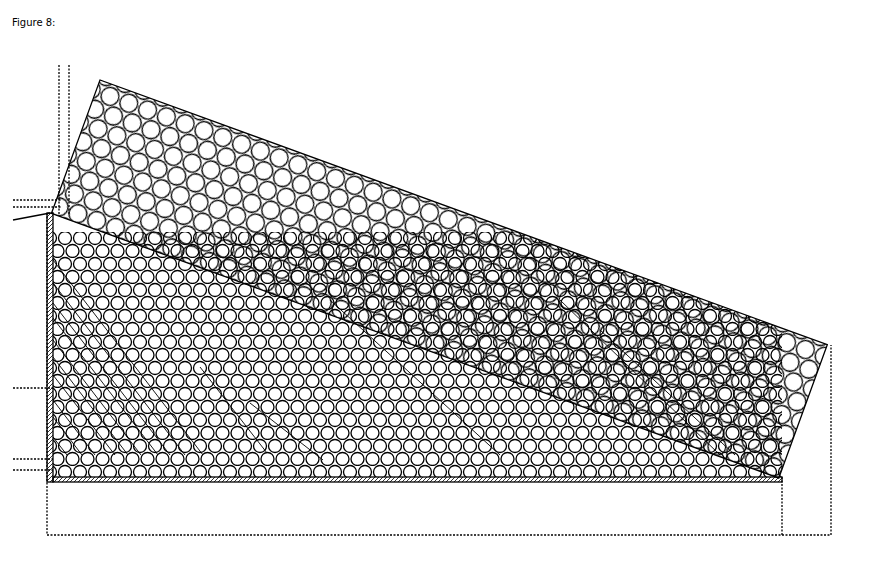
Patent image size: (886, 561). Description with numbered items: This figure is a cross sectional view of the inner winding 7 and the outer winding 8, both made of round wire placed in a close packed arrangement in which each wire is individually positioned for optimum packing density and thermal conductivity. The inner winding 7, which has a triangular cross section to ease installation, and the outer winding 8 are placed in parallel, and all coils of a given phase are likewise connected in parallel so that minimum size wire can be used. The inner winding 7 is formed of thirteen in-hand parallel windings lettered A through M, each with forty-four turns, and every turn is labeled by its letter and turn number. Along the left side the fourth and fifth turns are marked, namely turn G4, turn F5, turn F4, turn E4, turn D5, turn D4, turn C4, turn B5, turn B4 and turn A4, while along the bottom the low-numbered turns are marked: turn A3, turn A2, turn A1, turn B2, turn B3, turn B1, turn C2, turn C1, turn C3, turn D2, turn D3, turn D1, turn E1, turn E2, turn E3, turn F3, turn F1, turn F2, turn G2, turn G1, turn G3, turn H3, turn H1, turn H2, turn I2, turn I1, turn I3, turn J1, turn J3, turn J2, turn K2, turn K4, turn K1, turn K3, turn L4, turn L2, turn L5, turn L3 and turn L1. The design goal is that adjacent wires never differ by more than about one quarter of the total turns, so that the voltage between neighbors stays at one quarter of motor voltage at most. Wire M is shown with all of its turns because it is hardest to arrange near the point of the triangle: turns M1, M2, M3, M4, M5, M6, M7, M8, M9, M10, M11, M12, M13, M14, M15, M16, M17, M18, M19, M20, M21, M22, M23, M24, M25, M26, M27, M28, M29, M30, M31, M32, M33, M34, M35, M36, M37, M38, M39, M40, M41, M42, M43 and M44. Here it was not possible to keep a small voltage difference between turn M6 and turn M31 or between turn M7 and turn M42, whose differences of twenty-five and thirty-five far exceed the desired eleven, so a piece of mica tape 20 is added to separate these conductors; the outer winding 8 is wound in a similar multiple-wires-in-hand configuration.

The inner winding 7 is at (208, 232).
The outer winding 8 is at (327, 232).
The mica tape 20 is at (783, 470).
The turn 4 of winding G G4 is at (53, 260).
The turn 5 of winding F F5 is at (53, 283).
The turn 4 of winding F F4 is at (53, 303).
The turn 4 of winding E E4 is at (53, 318).
The turn 5 of winding D D5 is at (53, 340).
The turn 4 of winding D D4 is at (53, 357).
The turn 4 of winding C C4 is at (53, 375).
The turn 5 of winding B B5 is at (53, 400).
The turn 4 of winding B B4 is at (53, 417).
The turn 4 of winding A A4 is at (53, 437).
The turn 12 of winding M M12 is at (552, 470).
The turn 23 of winding M M23 is at (572, 470).
The turn 26 of winding M M26 is at (549, 470).
The turn 13 of winding M M13 is at (546, 470).
The turn 27 of winding M M27 is at (543, 470).
The turn 24 of winding M M24 is at (540, 470).
The turn 25 of winding M M25 is at (537, 470).
The turn 28 of winding M M28 is at (578, 470).
The turn 14 of winding M M14 is at (581, 470).
The turn 22 of winding M M22 is at (584, 470).
The turn 11 of winding M M11 is at (587, 470).
The turn 29 of winding M M29 is at (590, 470).
The turn 15 of winding M M15 is at (593, 470).
The turn 21 of winding M M21 is at (600, 470).
The turn 30 of winding M M30 is at (604, 470).
The turn 10 of winding M M10 is at (608, 470).
The turn 16 of winding M M16 is at (612, 470).
The turn 20 of winding M M20 is at (616, 470).
The turn 9 of winding M M9 is at (620, 470).
The turn 17 of winding M M17 is at (624, 470).
The turn 19 of winding M M19 is at (628, 470).
The turn 8 of winding M M8 is at (632, 470).
The turn 18 of winding M M18 is at (636, 470).
The turn 7 of winding M M7 is at (640, 470).
The turn 42 of winding M M42 is at (650, 470).
The turn 41 of winding M M41 is at (655, 470).
The turn 43 of winding M M43 is at (660, 470).
The turn 44 of winding M M44 is at (665, 470).
The turn 40 of winding M M40 is at (665, 470).
The turn 39 of winding M M39 is at (676, 470).
The turn 38 of winding M M38 is at (688, 470).
The turn 37 of winding M M37 is at (700, 470).
The turn 3 of winding A A3 is at (83, 482).
The turn 2 of winding A A2 is at (76, 482).
The turn 2 of winding B B2 is at (101, 482).
The turn 2 of winding C C2 is at (146, 482).
The turn 2 of winding D D2 is at (190, 482).
The turn 1 of winding E E1 is at (207, 482).
The turn 3 of winding F F3 is at (252, 482).
The turn 1 of winding F F1 is at (270, 482).
The turn 2 of winding G G2 is at (297, 482).
The turn 3 of winding H H3 is at (330, 482).
The turn 1 of winding H H1 is at (356, 482).
The turn 2 of winding I I2 is at (380, 482).
The turn 1 of winding J J1 is at (434, 482).
The turn 2 of winding K K2 is at (459, 482).
The turn 4 of winding K K4 is at (484, 482).
The turn 4 of winding L L4 is at (510, 482).
The turn 2 of winding L L2 is at (537, 482).
The turn 1 of winding M M1 is at (560, 482).
The turn 3 of winding M M3 is at (595, 482).
The turn 5 of winding M M5 is at (622, 482).
The turn 6 of winding M M6 is at (643, 482).
The turn 32 of winding M M32 is at (658, 482).
The turn 34 of winding M M34 is at (690, 482).
The turn 36 of winding M M36 is at (723, 482).
The turn 1 of winding A A1 is at (68, 482).
The turn 3 of winding B B3 is at (92, 482).
The turn 1 of winding B B1 is at (110, 482).
The turn 1 of winding C C1 is at (132, 482).
The turn 3 of winding C C3 is at (160, 482).
The turn 3 of winding D D3 is at (176, 482).
The turn 1 of winding D D1 is at (200, 482).
The turn 2 of winding E E2 is at (218, 482).
The turn 3 of winding E E3 is at (238, 482).
The turn 2 of winding F F2 is at (262, 482).
The turn 1 of winding G G1 is at (284, 482).
The turn 3 of winding G G3 is at (315, 482).
The turn 2 of winding H H2 is at (341, 482).
The turn 1 of winding I I1 is at (368, 482).
The turn 3 of winding I I3 is at (390, 482).
The turn 3 of winding J J3 is at (408, 482).
The turn 2 of winding J J2 is at (420, 482).
The turn 1 of winding K K1 is at (446, 482).
The turn 3 of winding K K3 is at (471, 482).
The turn 5 of winding L L5 is at (500, 482).
The turn 3 of winding L L3 is at (523, 482).
The turn 1 of winding L L1 is at (547, 482).
The turn 2 of winding M M2 is at (578, 482).
The turn 4 of winding M M4 is at (606, 482).
The turn 31 of winding M M31 is at (650, 482).
The turn 33 of winding M M33 is at (680, 482).
The turn 35 of winding M M35 is at (712, 482).